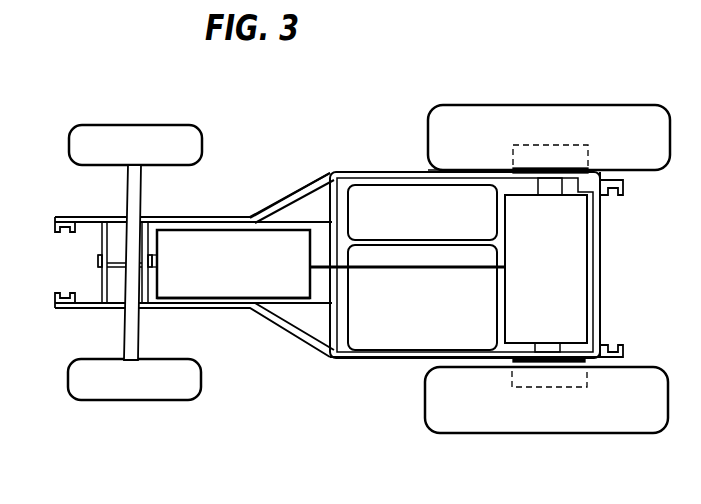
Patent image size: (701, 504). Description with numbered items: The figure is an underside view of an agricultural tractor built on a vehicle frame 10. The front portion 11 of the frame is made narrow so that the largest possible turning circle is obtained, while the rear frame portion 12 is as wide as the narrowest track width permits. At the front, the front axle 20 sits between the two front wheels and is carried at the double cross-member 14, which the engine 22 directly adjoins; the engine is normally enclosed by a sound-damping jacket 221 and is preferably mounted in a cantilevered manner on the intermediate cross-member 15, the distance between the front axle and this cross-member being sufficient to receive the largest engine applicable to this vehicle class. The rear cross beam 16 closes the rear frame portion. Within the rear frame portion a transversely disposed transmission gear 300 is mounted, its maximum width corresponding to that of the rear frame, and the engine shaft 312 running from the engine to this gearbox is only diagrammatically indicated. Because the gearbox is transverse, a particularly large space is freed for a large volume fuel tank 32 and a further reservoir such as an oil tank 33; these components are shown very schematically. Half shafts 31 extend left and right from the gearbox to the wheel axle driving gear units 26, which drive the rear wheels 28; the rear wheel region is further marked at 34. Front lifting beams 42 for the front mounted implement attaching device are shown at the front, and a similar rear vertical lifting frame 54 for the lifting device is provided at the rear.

The frame 10 is at (333, 359).
The front portion of the frame 11 is at (165, 218).
The rear frame portion 12 is at (398, 172).
The double cross-member 14 is at (100, 230).
The intermediate cross-member 15 is at (332, 188).
The rear cross beam 16 is at (600, 237).
The front axle 20 is at (137, 337).
The engine 22 is at (210, 272).
The sound-damping jacket 221 is at (272, 305).
The wheel axle driving gear units 26 is at (529, 387).
The rear wheels 28 is at (603, 126).
The transmission gear 300 is at (572, 247).
The half shafts 31 is at (557, 168).
The engine shaft 312 is at (437, 269).
The fuel tank 32 is at (396, 342).
The oil tank 33 is at (440, 222).
The rear axle 34 is at (428, 134).
The front lifting beams 42 is at (53, 292).
The rear vertical lifting frame 54 is at (621, 348).